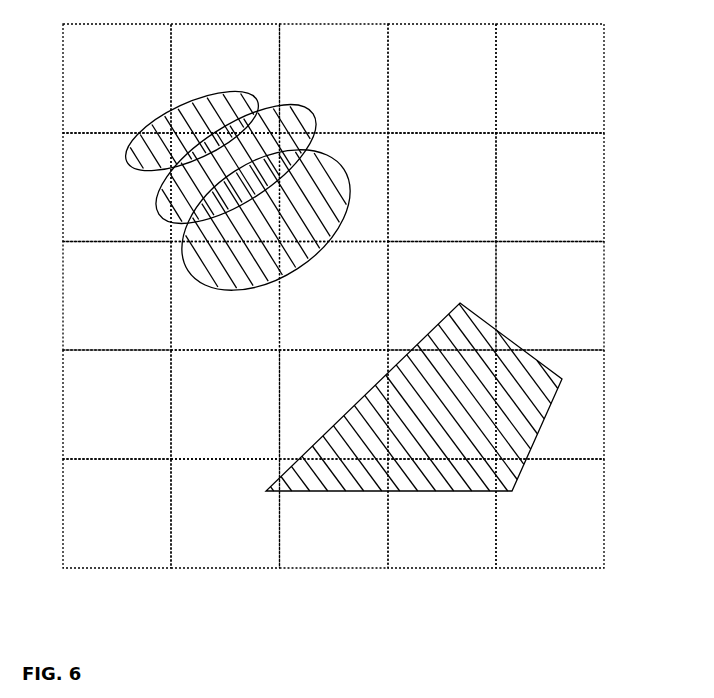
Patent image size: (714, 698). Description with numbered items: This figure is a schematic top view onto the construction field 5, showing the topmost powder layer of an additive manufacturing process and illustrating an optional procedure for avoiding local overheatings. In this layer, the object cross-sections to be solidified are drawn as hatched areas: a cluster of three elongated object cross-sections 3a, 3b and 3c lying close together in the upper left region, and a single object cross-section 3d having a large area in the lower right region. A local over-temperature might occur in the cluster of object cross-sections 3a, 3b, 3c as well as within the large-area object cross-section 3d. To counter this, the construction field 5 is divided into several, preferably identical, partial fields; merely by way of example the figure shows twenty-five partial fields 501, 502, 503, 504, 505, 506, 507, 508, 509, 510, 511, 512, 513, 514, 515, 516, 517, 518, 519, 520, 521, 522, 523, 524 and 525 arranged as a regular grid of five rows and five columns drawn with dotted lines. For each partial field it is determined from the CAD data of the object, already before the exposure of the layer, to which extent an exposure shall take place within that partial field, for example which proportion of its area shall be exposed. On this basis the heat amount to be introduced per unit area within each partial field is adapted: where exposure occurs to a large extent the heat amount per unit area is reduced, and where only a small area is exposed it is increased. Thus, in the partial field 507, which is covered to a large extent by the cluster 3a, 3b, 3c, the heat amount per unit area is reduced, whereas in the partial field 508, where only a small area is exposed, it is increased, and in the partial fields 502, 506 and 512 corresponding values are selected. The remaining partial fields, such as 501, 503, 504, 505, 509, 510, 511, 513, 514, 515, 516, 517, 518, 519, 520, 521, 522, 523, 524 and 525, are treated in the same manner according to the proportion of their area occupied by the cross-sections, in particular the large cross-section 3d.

The partial field 501 is at (117, 78).
The partial field 502 is at (225, 78).
The partial field 503 is at (334, 78).
The partial field 504 is at (442, 78).
The partial field 505 is at (550, 78).
The partial field 506 is at (117, 187).
The partial field 507 is at (225, 187).
The partial field 508 is at (334, 187).
The partial field 509 is at (442, 187).
The partial field 510 is at (550, 187).
The partial field 511 is at (117, 296).
The partial field 512 is at (225, 296).
The partial field 513 is at (334, 296).
The partial field 514 is at (442, 296).
The partial field 515 is at (550, 296).
The partial field 516 is at (117, 404).
The partial field 517 is at (225, 404).
The partial field 518 is at (334, 404).
The partial field 519 is at (442, 404).
The partial field 520 is at (550, 404).
The partial field 521 is at (117, 513).
The partial field 522 is at (225, 513).
The partial field 523 is at (334, 513).
The partial field 524 is at (442, 513).
The partial field 525 is at (550, 513).
The object cross-section 3a is at (223, 90).
The object cross-section 3b is at (303, 103).
The object cross-section 3c is at (338, 163).
The object cross-section 3d is at (503, 338).
The construction field 5 is at (608, 88).